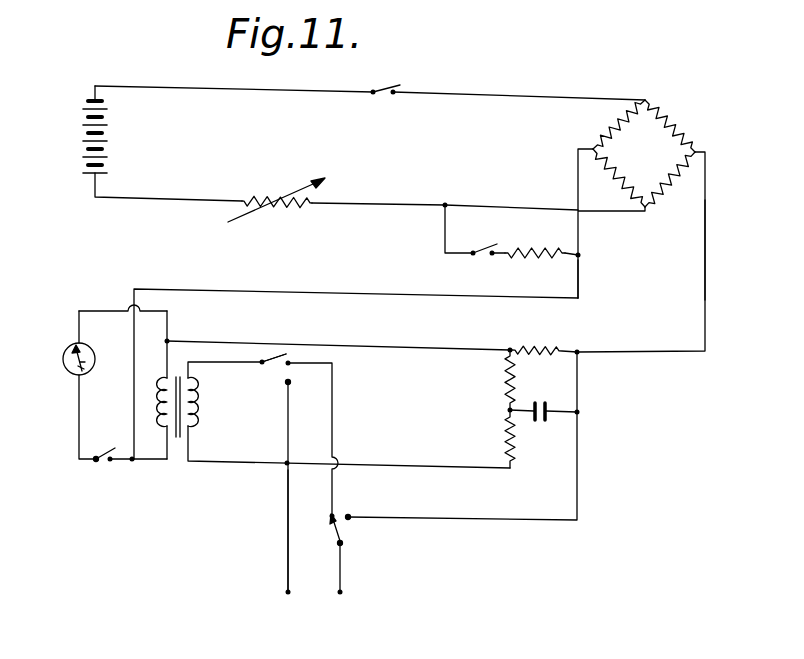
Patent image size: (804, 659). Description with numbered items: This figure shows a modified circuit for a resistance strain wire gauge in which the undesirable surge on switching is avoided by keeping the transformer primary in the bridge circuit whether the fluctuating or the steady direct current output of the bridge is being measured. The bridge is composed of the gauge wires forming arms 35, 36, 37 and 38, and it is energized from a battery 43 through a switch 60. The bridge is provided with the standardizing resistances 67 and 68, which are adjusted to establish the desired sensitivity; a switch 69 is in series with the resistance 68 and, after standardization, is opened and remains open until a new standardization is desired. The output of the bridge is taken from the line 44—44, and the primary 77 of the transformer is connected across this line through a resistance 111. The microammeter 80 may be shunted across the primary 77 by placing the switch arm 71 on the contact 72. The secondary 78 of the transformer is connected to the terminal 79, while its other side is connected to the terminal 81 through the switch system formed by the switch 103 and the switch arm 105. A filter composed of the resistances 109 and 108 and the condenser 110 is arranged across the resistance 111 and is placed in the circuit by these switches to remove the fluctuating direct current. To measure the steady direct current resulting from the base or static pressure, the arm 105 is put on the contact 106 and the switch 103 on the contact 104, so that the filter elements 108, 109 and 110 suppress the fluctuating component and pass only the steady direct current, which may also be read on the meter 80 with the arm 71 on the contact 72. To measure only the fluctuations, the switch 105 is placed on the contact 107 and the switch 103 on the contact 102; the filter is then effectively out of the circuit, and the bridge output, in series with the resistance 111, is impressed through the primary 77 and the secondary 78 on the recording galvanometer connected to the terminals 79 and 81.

The bridge arm 35 is at (670, 179).
The bridge arm 36 is at (619, 178).
The bridge arm 37 is at (670, 126).
The bridge arm 38 is at (619, 124).
The battery 43 is at (82, 150).
The output line 44 is at (705, 239).
The switch 60 is at (386, 80).
The standardizing resistance 67 is at (268, 206).
The standardizing resistance 68 is at (538, 260).
The switch 69 is at (484, 246).
The switch arm 71 is at (108, 454).
The contact 72 is at (96, 466).
The primary 77 is at (158, 407).
The secondary 78 is at (203, 412).
The terminal 79 is at (284, 548).
The microammeter 80 is at (63, 360).
The terminal 81 is at (341, 568).
The contact 102 is at (292, 359).
The switch 103 is at (272, 365).
The contact 104 is at (286, 385).
The switch arm 105 is at (345, 536).
The contact 106 is at (350, 516).
The contact 107 is at (336, 511).
The resistance 108 is at (505, 440).
The resistance 109 is at (505, 378).
The condenser 110 is at (554, 385).
The resistance 111 is at (556, 336).